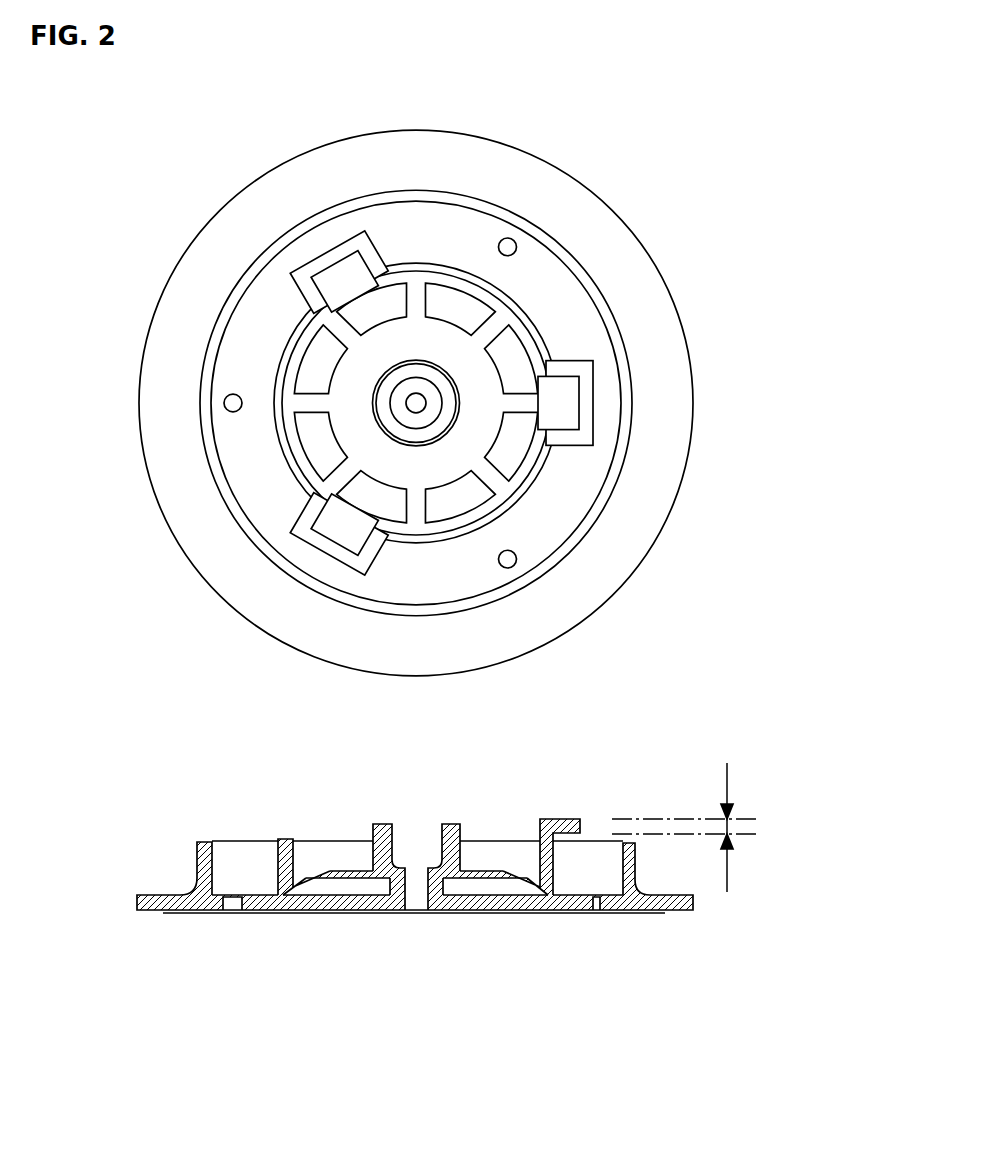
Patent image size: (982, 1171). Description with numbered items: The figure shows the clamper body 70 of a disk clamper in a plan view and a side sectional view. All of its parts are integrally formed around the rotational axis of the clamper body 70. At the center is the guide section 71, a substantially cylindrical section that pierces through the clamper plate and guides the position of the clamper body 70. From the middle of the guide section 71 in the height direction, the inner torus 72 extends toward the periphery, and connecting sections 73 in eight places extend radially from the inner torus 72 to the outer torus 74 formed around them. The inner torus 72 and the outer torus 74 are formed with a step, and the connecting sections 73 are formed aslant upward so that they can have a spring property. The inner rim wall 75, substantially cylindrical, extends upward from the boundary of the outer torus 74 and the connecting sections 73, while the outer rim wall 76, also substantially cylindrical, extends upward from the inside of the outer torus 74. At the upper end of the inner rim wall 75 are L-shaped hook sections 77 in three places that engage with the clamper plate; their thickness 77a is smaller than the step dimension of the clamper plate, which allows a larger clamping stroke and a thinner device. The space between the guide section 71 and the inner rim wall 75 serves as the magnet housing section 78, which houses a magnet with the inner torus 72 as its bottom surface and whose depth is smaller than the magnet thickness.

The clamper body 70 is at (494, 135).
The guide section 71 is at (414, 366).
The inner torus 72 is at (487, 403).
The connecting sections 73 is at (493, 325).
The outer torus 74 is at (527, 273).
The inner rim wall 75 is at (308, 333).
The outer rim wall 76 is at (207, 358).
The L-shaped hook sections 77 is at (562, 410).
The thickness of the L-shaped hook sections 77a is at (745, 827).
The magnet housing section 78 is at (495, 858).